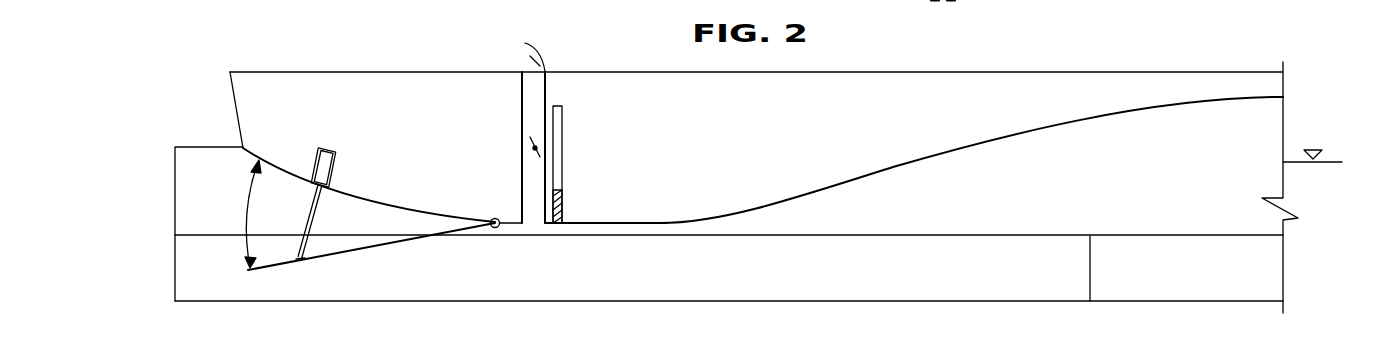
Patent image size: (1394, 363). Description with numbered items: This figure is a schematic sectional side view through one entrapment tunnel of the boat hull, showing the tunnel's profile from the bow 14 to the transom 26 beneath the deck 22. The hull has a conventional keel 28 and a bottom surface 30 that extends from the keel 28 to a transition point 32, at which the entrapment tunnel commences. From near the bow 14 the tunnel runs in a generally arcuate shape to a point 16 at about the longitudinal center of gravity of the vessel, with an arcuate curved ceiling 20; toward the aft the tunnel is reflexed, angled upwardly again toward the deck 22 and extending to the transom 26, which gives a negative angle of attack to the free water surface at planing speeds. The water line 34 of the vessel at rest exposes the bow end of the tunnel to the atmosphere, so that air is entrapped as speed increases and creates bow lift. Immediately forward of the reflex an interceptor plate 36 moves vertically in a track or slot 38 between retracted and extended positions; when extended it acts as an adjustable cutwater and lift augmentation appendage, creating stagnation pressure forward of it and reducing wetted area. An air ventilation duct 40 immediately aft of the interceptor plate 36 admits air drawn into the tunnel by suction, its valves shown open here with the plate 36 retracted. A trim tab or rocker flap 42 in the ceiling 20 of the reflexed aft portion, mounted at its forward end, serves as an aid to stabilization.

The bow 14 is at (1222, 71).
The point 16 is at (623, 227).
The curved ceiling 20 is at (400, 208).
The deck 22 is at (378, 71).
The transom 26 is at (176, 207).
The keel 28 is at (927, 302).
The bottom surface 30 is at (729, 258).
The transition point 32 is at (1090, 237).
The water line 34 is at (1332, 157).
The interceptor plate 36 is at (563, 210).
The track or slot 38 is at (563, 155).
The air ventilation duct 40 is at (520, 92).
The trim tab or rocker flap 42 is at (383, 247).